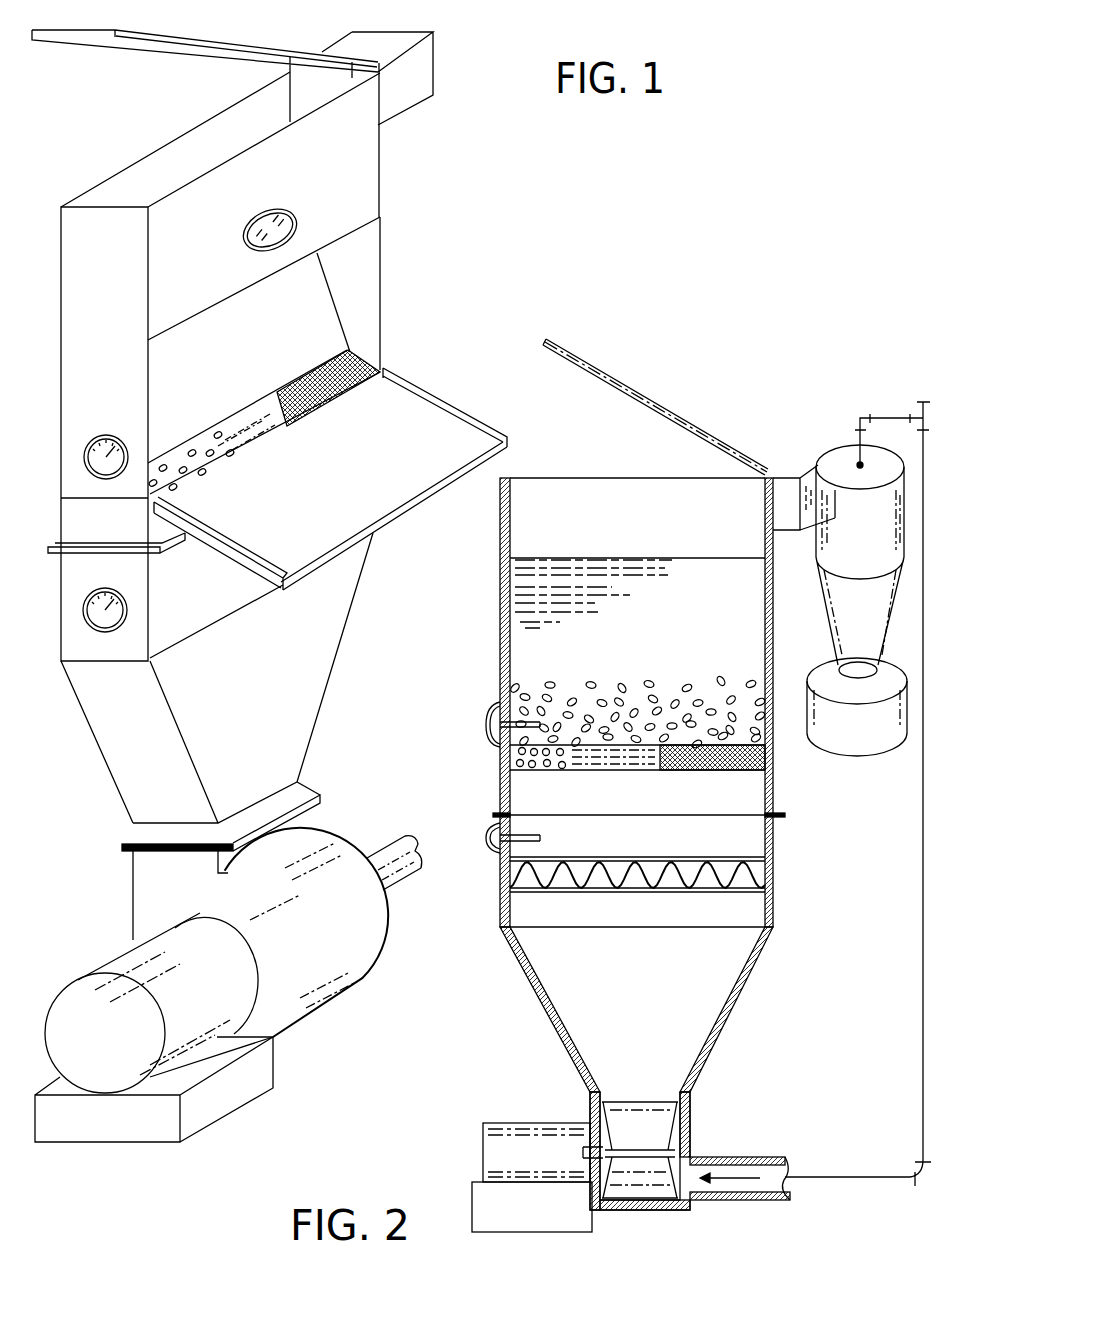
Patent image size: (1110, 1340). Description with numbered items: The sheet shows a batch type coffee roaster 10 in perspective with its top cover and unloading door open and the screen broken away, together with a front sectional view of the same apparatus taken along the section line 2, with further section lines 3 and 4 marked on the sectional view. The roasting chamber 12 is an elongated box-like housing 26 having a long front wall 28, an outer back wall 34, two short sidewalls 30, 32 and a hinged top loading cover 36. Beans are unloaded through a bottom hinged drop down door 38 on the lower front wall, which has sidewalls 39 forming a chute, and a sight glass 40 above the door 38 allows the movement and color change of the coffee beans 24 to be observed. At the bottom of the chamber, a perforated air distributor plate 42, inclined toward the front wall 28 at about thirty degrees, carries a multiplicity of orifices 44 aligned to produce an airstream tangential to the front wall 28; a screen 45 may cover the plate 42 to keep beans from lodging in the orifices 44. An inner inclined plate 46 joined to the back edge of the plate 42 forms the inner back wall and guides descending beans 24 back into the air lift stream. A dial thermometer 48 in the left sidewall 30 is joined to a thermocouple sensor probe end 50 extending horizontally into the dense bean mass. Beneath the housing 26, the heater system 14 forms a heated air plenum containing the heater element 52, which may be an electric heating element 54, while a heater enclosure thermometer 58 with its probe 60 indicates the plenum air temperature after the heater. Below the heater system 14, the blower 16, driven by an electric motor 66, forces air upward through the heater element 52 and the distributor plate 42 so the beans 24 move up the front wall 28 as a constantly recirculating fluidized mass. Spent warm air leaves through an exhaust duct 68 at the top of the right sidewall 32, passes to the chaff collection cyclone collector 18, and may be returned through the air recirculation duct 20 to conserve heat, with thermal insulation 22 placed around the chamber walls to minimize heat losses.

In FIG. 1, the batch type coffee roaster 10 is at (423, 204).
In FIG. 1, the roasting chamber 12 is at (222, 360).
In FIG. 1, the heater system 14 is at (228, 611).
In FIG. 2, the heater system 14 is at (642, 852).
In FIG. 1, the blower 16 is at (356, 944).
In FIG. 2, the blower 16 is at (655, 1142).
In FIG. 2, the cyclone collector 18 is at (877, 551).
In FIG. 1, the air recirculation duct 20 is at (370, 852).
In FIG. 2, the air recirculation duct 20 is at (923, 1021).
In FIG. 2, the thermal insulation 22 is at (500, 645).
In FIG. 2, the coffee beans 24 is at (687, 688).
In FIG. 1, the housing 26 is at (202, 362).
In FIG. 1, the front wall 28 is at (203, 291).
In FIG. 1, the left sidewall 30 is at (107, 261).
In FIG. 1, the right sidewall 32 is at (372, 317).
In FIG. 1, the outer back wall 34 is at (205, 169).
In FIG. 1, the top loading cover 36 is at (232, 43).
In FIG. 1, the unloading door 38 is at (352, 491).
In FIG. 1, the door sidewalls 39 is at (462, 418).
In FIG. 1, the sight glass 40 is at (289, 207).
In FIG. 1, the air distributor plate 42 is at (268, 437).
In FIG. 1, the orifices 44 is at (186, 474).
In FIG. 1, the screen 45 is at (362, 362).
In FIG. 1, the inner inclined plate 46 is at (340, 302).
In FIG. 1, the dial thermometer 48 is at (126, 420).
In FIG. 2, the dial thermometer 48 is at (487, 722).
In FIG. 2, the thermocouple sensor probe end 50 is at (528, 700).
In FIG. 2, the heater element 52 is at (723, 860).
In FIG. 2, the electric heating element 54 is at (742, 882).
In FIG. 1, the heater enclosure thermometer 58 is at (127, 601).
In FIG. 2, the heater enclosure thermometer 58 is at (490, 856).
In FIG. 2, the probe 60 is at (538, 842).
In FIG. 1, the electric motor 66 is at (225, 1001).
In FIG. 2, the electric motor 66 is at (550, 1174).
In FIG. 1, the exhaust duct 68 is at (417, 34).
In FIG. 2, the exhaust duct 68 is at (790, 478).
In FIG. 1, the section line 2 is at (420, 275).
In FIG. 2, the section line 3 is at (635, 437).
In FIG. 2, the section line 4 is at (473, 543).